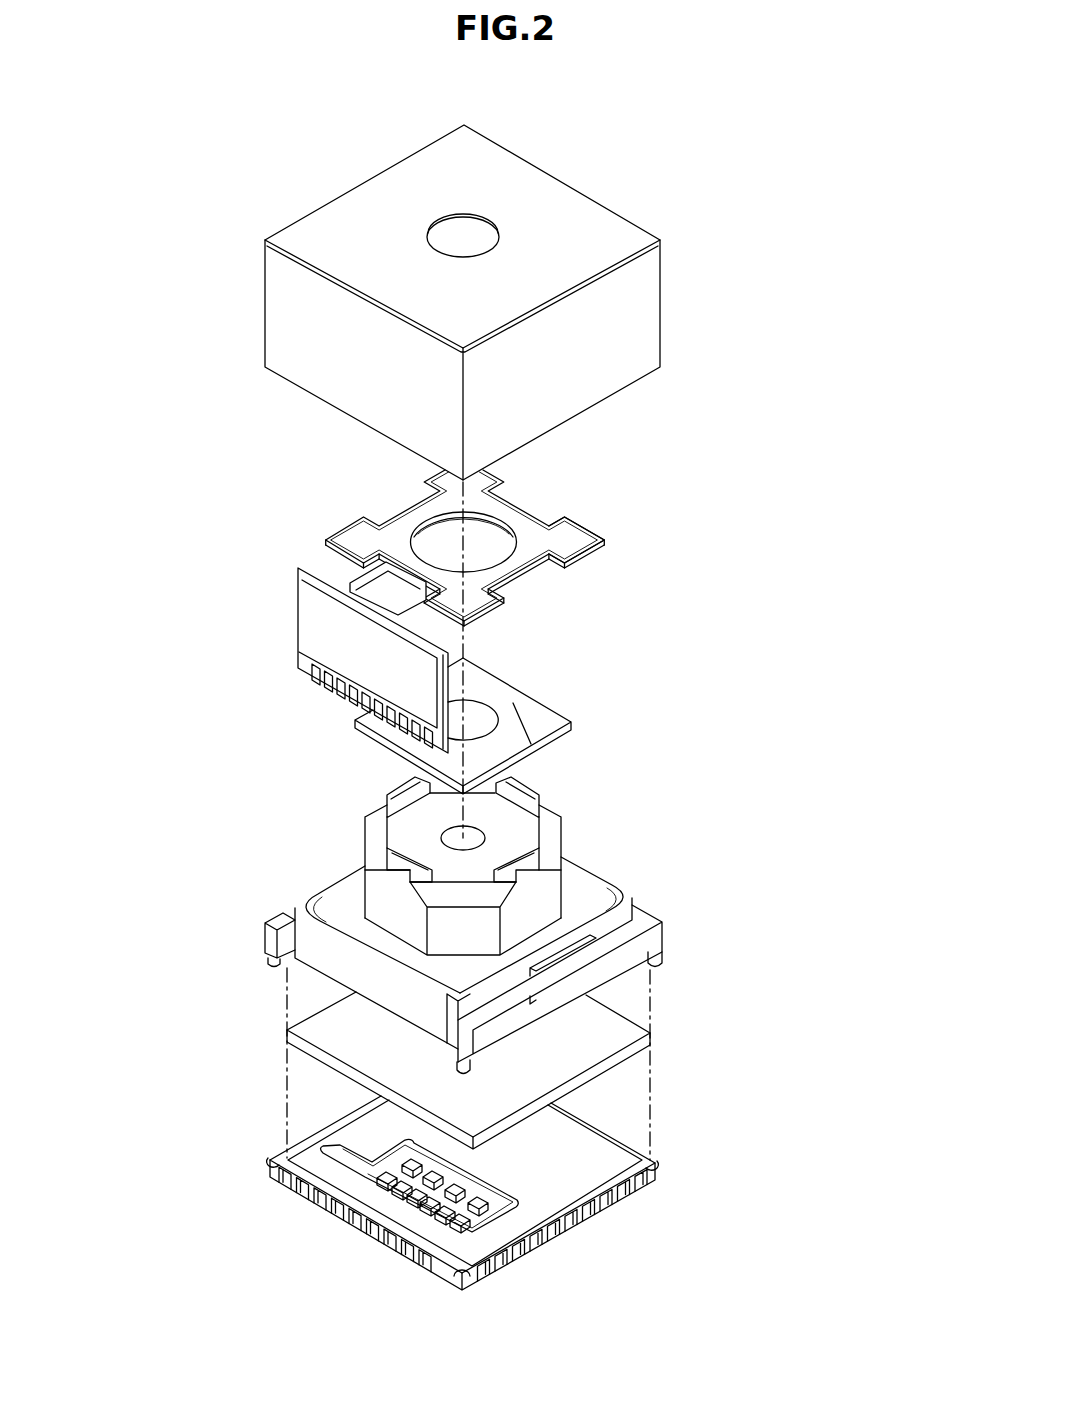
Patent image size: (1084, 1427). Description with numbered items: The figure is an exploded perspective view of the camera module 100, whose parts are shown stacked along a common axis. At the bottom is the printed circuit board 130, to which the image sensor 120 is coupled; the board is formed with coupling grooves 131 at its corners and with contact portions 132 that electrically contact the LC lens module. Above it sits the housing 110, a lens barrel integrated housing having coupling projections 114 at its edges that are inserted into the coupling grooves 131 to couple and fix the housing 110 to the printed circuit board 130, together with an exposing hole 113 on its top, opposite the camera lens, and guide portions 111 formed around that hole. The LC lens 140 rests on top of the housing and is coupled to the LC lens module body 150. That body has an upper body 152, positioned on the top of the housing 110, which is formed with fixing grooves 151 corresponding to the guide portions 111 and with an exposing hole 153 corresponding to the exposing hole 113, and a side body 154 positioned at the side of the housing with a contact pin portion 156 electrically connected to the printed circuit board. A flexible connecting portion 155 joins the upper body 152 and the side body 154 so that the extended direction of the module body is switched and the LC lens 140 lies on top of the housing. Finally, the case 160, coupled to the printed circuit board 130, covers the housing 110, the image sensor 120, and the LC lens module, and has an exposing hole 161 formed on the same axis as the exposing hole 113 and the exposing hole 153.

The camera module 100 is at (332, 115).
The housing 110 is at (506, 912).
The guide portions 111 is at (523, 792).
The exposing hole 113 is at (470, 836).
The coupling projections 114 is at (664, 954).
The image sensor 120 is at (627, 1011).
The printed circuit board 130 is at (491, 1221).
The coupling grooves 131 is at (268, 1161).
The contact portions 132 is at (308, 1198).
The LC lens 140 is at (535, 681).
The LC lens module body 150 is at (458, 600).
The fixing grooves 151 is at (528, 504).
The upper body 152 is at (568, 541).
The exposing hole 153 is at (501, 565).
The side body 154 is at (331, 660).
The flexible connecting portion 155 is at (316, 562).
The contact pin portion 156 is at (305, 667).
The case 160 is at (546, 302).
The exposing hole 161 is at (470, 236).